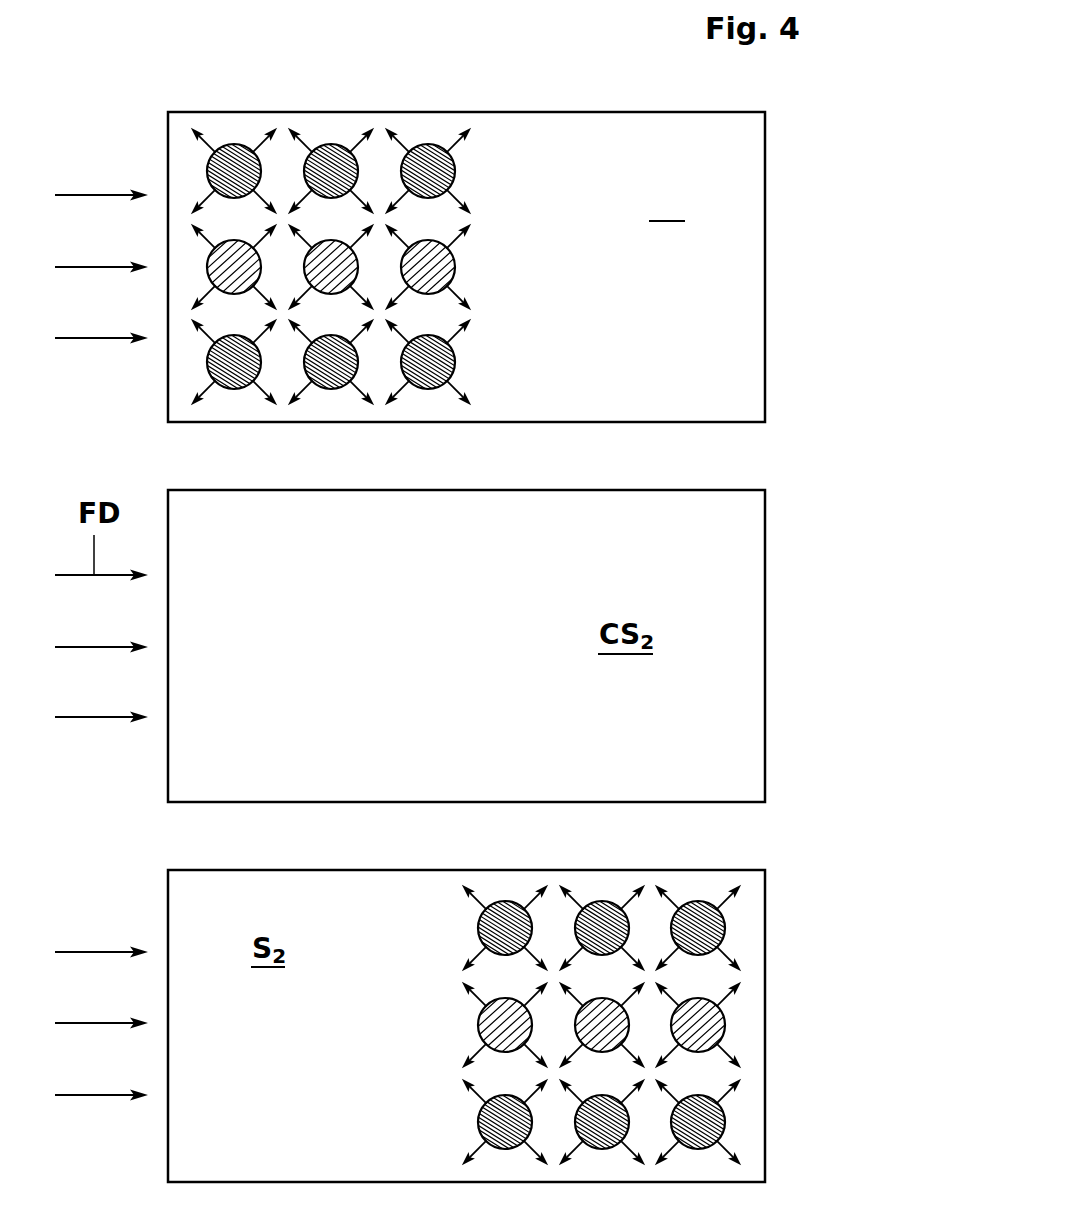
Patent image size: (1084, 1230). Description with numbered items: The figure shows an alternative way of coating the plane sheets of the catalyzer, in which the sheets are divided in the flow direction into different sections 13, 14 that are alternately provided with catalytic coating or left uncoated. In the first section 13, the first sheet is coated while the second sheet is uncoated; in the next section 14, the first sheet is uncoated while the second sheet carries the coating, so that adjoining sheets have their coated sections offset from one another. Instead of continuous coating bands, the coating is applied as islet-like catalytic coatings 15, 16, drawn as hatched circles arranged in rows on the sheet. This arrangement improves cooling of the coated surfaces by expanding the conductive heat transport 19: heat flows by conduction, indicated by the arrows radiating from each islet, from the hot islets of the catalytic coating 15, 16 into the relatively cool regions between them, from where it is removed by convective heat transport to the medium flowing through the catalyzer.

The section 13 is at (283, 80).
The section 14 is at (617, 80).
The islet-like catalytic coating 15 is at (438, 171).
The islet-like catalytic coating 16 is at (438, 267).
The conductive heat transport 19 is at (460, 334).